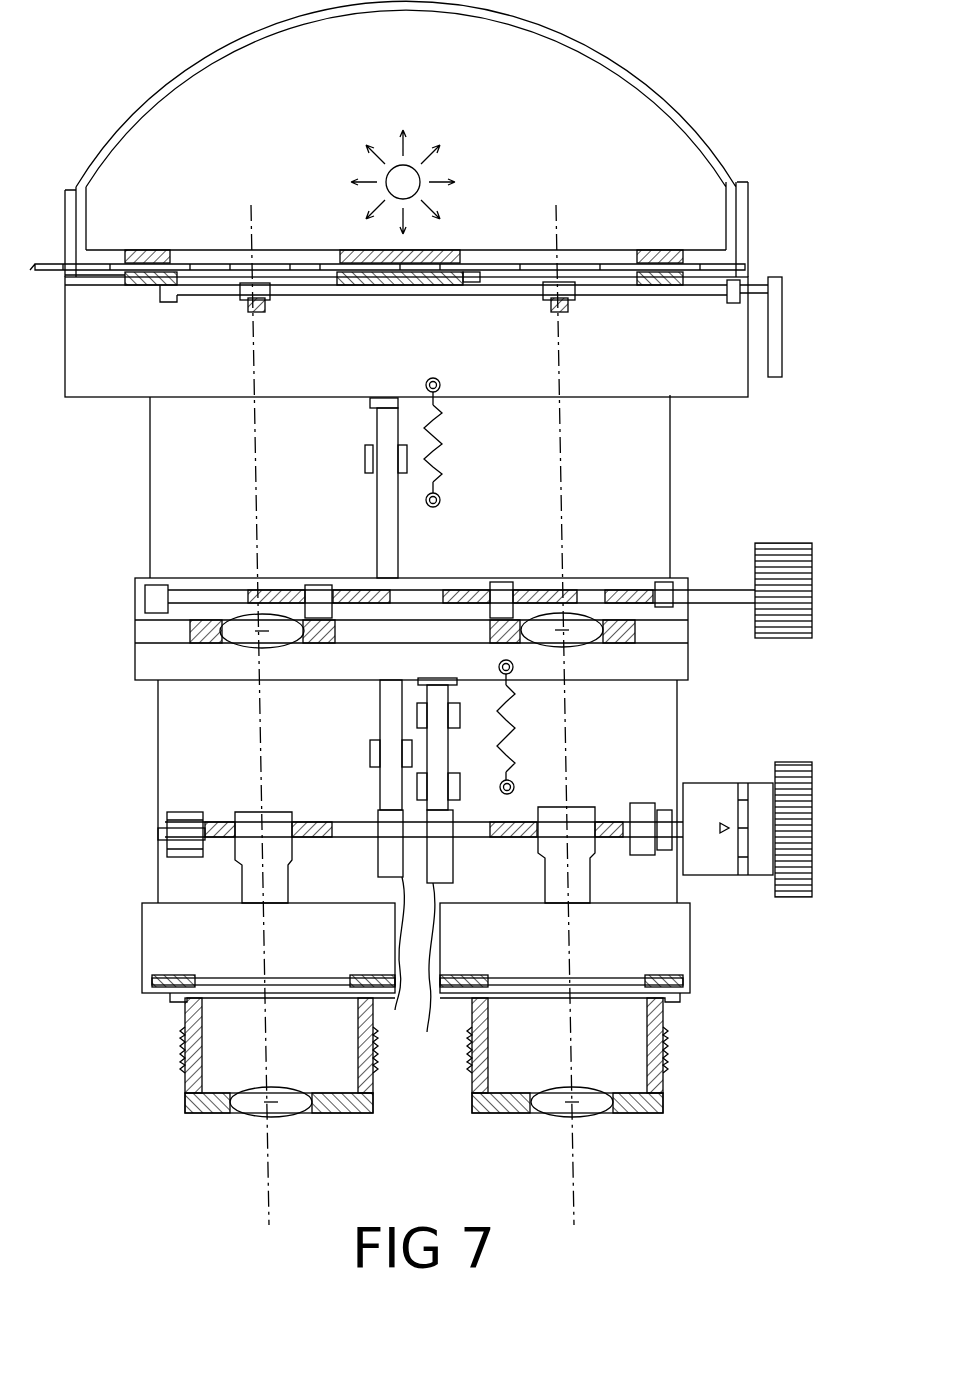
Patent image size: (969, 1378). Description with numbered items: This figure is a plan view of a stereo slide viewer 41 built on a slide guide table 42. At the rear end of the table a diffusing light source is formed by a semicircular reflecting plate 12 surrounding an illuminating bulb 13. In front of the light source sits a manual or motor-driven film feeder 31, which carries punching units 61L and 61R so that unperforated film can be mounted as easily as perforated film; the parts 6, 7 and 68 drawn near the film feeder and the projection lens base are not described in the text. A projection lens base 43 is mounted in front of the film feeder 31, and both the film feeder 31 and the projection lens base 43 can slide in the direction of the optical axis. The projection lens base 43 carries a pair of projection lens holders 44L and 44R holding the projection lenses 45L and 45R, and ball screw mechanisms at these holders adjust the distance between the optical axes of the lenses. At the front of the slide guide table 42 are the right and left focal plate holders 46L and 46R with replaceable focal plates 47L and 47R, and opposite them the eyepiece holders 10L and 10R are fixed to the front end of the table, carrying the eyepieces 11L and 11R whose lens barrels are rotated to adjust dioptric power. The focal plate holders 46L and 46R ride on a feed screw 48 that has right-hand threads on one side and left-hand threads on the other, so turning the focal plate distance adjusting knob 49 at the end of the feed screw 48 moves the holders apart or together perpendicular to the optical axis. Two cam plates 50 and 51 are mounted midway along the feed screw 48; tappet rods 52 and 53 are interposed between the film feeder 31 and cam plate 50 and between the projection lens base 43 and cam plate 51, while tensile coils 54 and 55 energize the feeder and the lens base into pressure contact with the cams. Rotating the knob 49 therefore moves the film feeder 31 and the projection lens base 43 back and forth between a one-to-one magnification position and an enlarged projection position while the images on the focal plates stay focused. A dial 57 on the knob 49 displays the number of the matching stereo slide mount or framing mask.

The stereo slide viewer 41 is at (108, 98).
The semicircular reflecting plate 12 is at (612, 50).
The illuminating bulb 13 is at (420, 170).
The film feeder 31 is at (131, 308).
The punching unit 61L is at (243, 310).
The punching unit 61R is at (573, 310).
The lever 68 is at (775, 380).
The slide guide table 42 is at (178, 500).
The tensile coil 54 is at (447, 453).
The adjustment shaft 6 is at (712, 583).
The adjustment knob 7 is at (775, 541).
The projection lens base 43 is at (157, 668).
The projection lens holder 44L is at (188, 633).
The projection lens holder 44R is at (643, 633).
The projection lens 45L is at (235, 646).
The projection lens 45R is at (580, 642).
The tappet rod 52 is at (383, 720).
The tappet rod 53 is at (437, 765).
The tensile coil 55 is at (517, 742).
The feed screw 48 is at (630, 792).
The dial 57 is at (760, 783).
The focal plate distance adjusting knob 49 is at (792, 762).
The focal plate holder 46L is at (160, 923).
The focal plate holder 46R is at (680, 920).
The focal plate 47L is at (220, 977).
The focal plate 47R is at (630, 967).
The eyepiece holder 10L is at (183, 1015).
The eyepiece holder 10R is at (664, 1014).
The eyepiece 11L is at (257, 1117).
The eyepiece 11R is at (598, 1117).
The cam plate 50 is at (401, 958).
The cam plate 51 is at (435, 974).